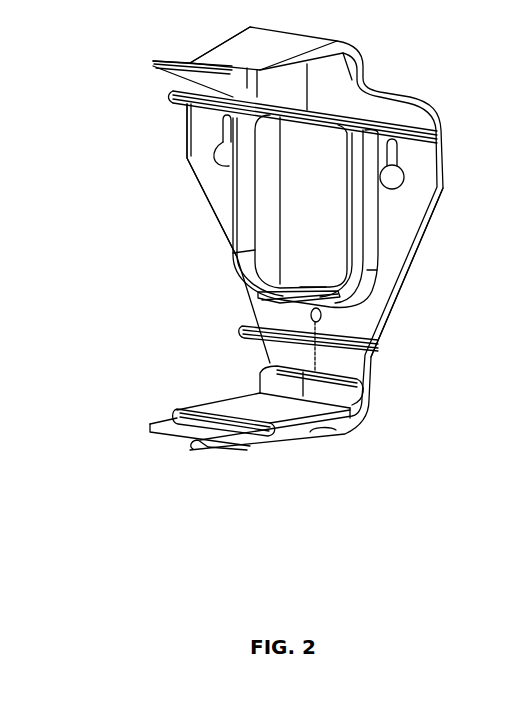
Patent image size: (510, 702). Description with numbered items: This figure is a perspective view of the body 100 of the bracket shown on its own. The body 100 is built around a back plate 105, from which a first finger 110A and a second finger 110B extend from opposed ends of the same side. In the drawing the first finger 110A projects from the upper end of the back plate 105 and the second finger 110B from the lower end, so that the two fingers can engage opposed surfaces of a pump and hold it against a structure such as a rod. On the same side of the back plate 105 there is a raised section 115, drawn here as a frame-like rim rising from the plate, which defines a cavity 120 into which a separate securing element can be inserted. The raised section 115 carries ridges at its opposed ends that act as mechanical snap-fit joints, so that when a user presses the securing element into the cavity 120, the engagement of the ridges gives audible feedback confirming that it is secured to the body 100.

The body 100 is at (384, 465).
The back plate 105 is at (207, 197).
The first finger 110A is at (220, 41).
The second finger 110B is at (152, 426).
The raised section 115 is at (233, 262).
The cavity 120 is at (337, 278).